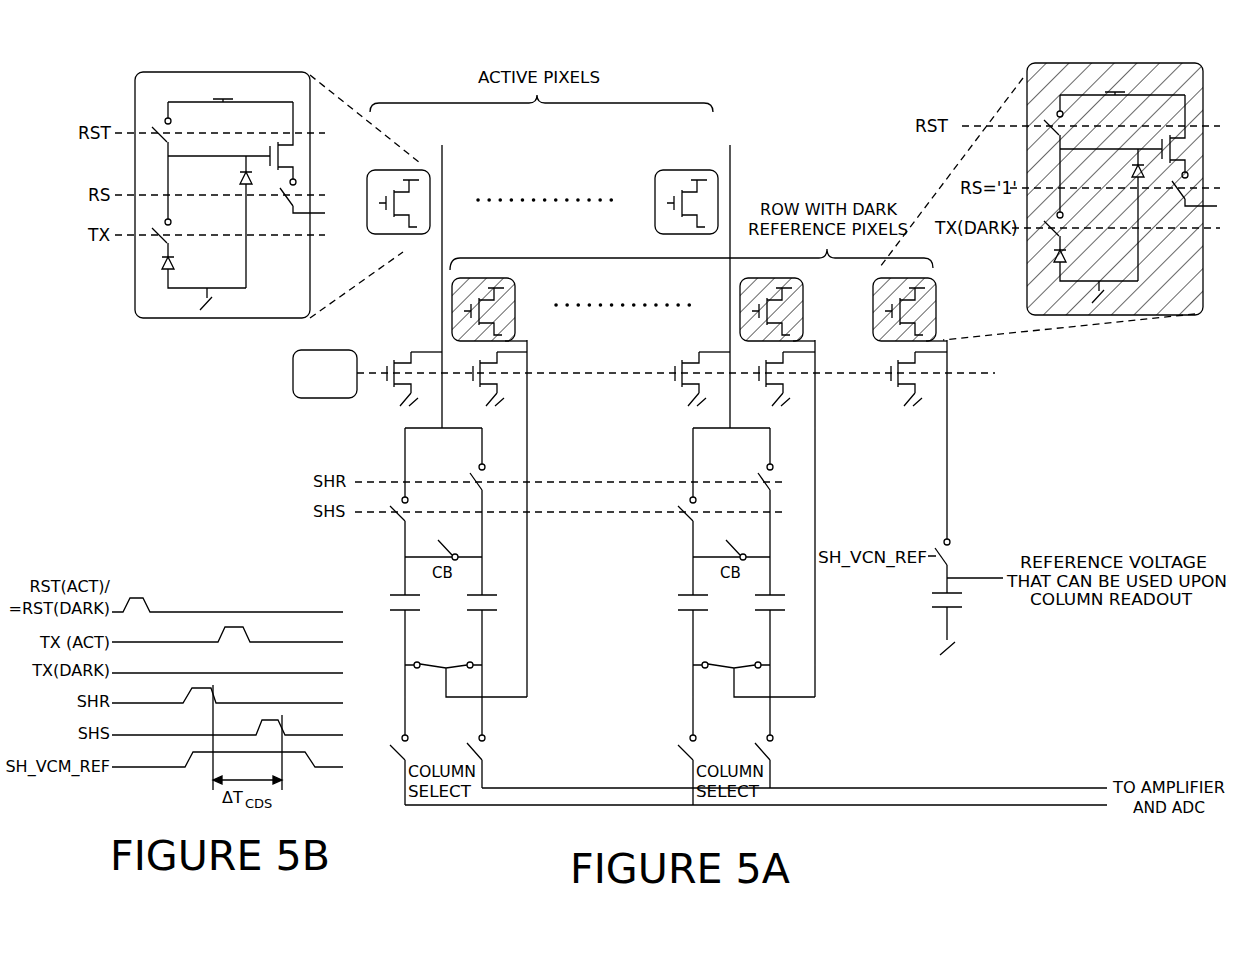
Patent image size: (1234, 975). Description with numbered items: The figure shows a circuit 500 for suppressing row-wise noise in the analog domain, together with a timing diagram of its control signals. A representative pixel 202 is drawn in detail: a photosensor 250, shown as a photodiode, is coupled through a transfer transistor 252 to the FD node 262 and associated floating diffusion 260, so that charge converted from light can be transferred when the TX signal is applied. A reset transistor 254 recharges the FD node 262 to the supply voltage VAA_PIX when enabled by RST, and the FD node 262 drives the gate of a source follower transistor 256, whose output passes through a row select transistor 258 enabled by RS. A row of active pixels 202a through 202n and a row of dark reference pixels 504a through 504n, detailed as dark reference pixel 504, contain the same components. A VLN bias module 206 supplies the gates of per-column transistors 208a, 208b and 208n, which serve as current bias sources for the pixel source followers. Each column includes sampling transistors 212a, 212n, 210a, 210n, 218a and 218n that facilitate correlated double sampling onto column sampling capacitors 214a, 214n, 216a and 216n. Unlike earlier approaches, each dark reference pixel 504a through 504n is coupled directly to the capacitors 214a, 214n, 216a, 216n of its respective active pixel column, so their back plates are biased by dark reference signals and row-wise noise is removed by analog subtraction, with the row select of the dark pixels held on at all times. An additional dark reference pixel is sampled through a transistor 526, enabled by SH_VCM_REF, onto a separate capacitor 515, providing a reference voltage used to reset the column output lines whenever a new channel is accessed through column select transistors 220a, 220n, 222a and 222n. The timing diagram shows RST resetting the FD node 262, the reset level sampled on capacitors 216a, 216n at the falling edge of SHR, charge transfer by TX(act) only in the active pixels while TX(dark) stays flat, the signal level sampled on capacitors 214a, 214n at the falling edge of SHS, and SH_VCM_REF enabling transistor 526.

The pixel 202 is at (230, 185).
The reset transistor 254 is at (172, 125).
The source follower transistor 256 is at (265, 140).
The FD node 262 is at (242, 157).
The FD node 260 is at (208, 177).
The transfer transistor 252 is at (176, 227).
The row select transistor 258 is at (290, 205).
The photosensor 250 is at (180, 268).
The active pixel 202a is at (403, 236).
The active pixel 202n is at (662, 168).
The dark reference pixel 504 is at (1068, 63).
The dark reference pixel 504a is at (515, 283).
The dark reference pixel 504n is at (803, 283).
The circuit 500 is at (948, 68).
The VLN bias module 206 is at (293, 392).
The per-column transistor 208a is at (407, 363).
The per-column transistor 208b is at (486, 388).
The per-column transistor 208n is at (696, 363).
The transistor 212a is at (478, 466).
The transistor 212n is at (741, 511).
The transistor 210a is at (396, 523).
The transistor 210n is at (673, 511).
The transistor 218a is at (437, 543).
The transistor 218n is at (731, 538).
The column sampling capacitor 214a is at (398, 614).
The column sampling capacitor 214n is at (679, 625).
The column sampling capacitor 216a is at (469, 614).
The column sampling capacitor 216n is at (752, 625).
The column select transistor 220a is at (398, 734).
The column select transistor 220n is at (673, 758).
The column select transistor 222a is at (506, 758).
The column select transistor 222n is at (786, 761).
The transistor 526 is at (937, 541).
The capacitor 515 is at (928, 607).